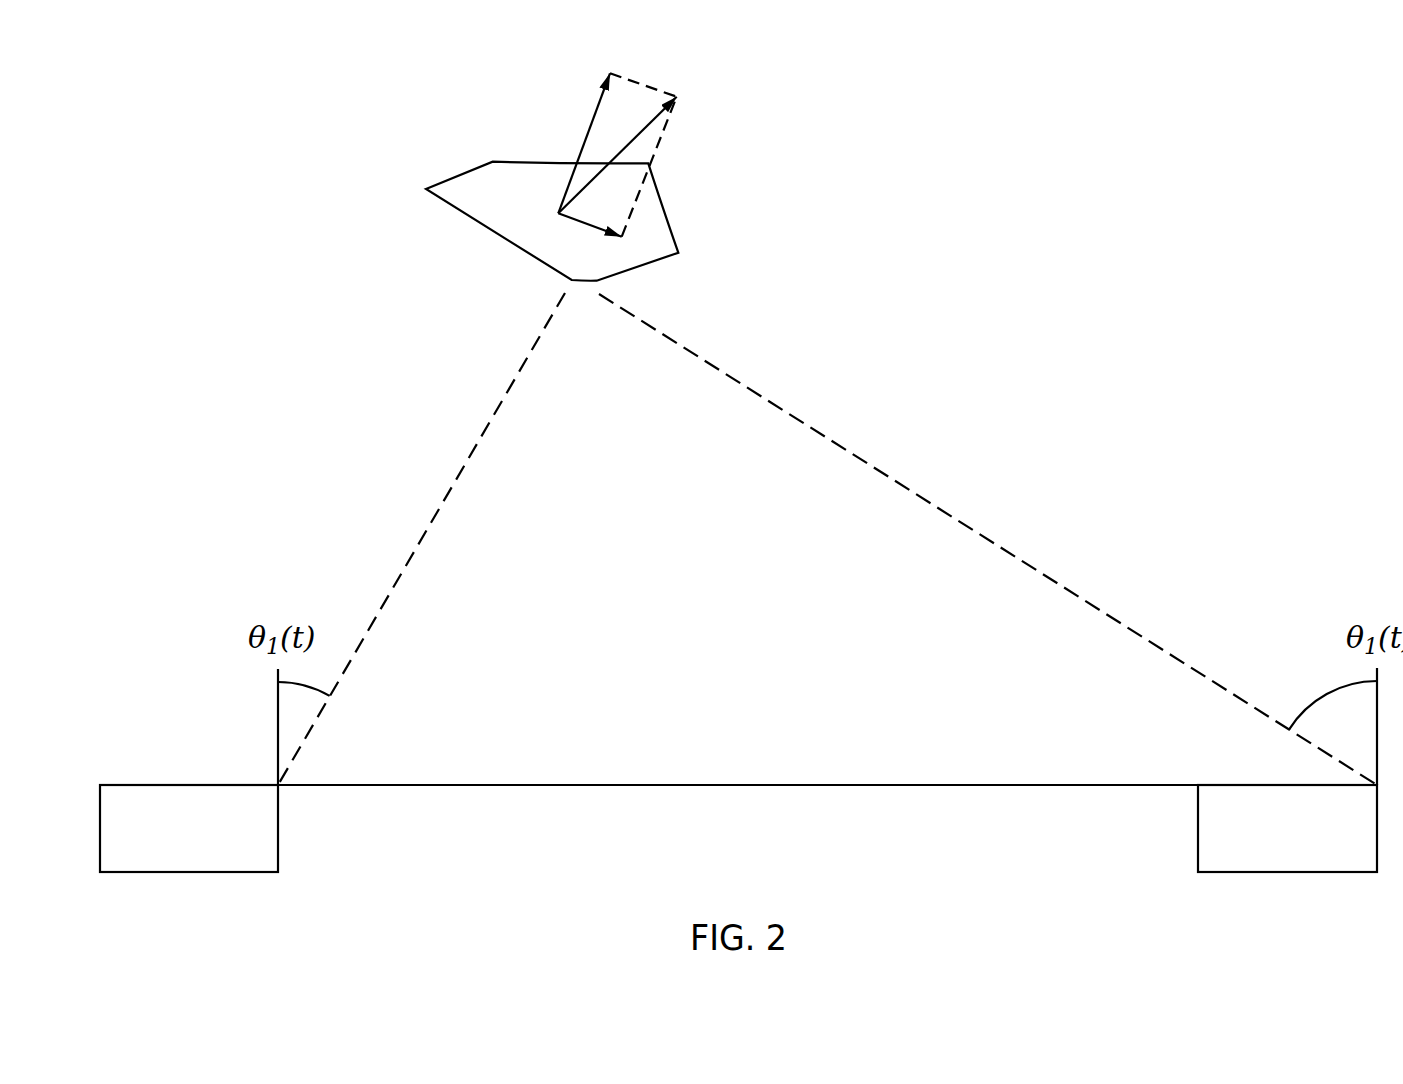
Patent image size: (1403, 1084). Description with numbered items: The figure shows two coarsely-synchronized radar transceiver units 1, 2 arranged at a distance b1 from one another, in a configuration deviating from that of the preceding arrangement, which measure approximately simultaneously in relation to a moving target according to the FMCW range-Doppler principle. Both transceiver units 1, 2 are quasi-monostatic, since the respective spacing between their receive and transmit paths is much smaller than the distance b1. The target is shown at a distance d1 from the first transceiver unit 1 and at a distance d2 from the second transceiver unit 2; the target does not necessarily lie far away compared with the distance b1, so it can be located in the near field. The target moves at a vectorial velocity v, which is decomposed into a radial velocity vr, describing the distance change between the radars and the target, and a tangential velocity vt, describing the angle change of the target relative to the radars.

The transceiver unit 1 is at (188, 784).
The transceiver unit 2 is at (1287, 784).
The distance to the target d1 is at (421, 539).
The distance to the target d2 is at (988, 539).
The distance between the transceiver units b1 is at (827, 761).
The vectorial velocity v is at (630, 149).
The radial velocity vr is at (584, 128).
The tangential velocity vt is at (612, 232).